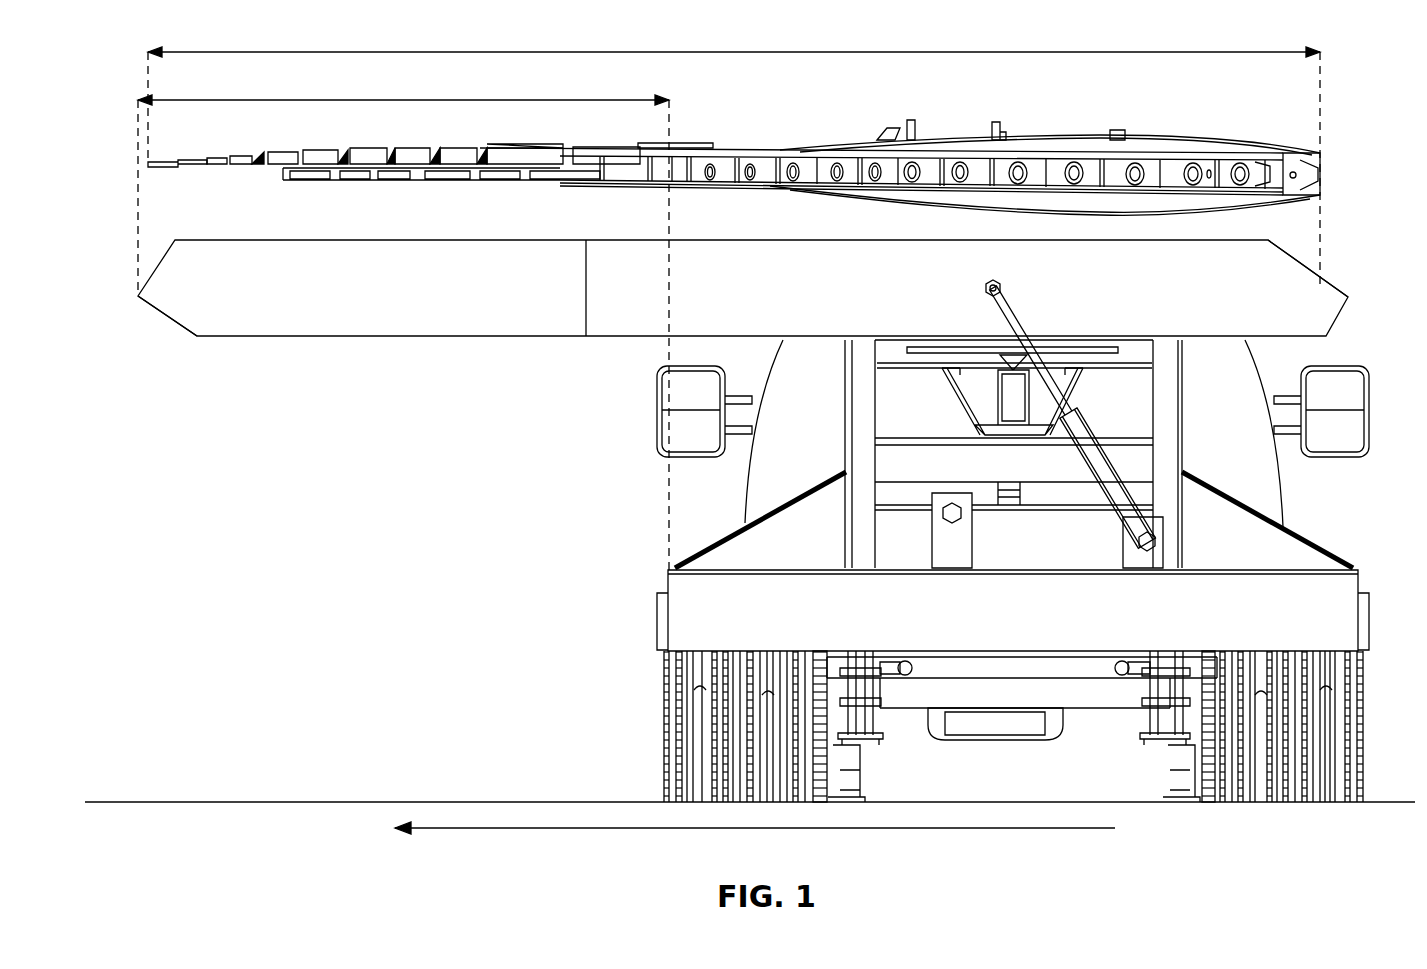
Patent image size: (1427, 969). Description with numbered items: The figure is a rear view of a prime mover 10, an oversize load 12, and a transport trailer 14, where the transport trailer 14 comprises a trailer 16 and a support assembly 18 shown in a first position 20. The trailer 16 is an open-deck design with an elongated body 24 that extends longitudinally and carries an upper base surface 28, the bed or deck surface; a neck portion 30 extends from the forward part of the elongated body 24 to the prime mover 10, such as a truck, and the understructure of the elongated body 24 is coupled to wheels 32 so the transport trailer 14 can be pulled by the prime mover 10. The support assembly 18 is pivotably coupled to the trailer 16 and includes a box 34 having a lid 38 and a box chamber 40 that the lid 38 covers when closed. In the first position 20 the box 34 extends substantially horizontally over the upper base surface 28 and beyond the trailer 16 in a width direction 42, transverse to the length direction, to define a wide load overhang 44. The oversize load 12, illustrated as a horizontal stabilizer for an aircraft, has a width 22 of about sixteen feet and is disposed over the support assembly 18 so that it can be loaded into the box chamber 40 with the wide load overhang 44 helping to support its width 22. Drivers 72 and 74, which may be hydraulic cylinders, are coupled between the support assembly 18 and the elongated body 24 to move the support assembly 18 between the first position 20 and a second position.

The prime mover 10 is at (1285, 502).
The oversize load 12 is at (587, 148).
The transport trailer 14 is at (365, 323).
The trailer 16 is at (1337, 630).
The support assembly 18 is at (1285, 261).
The first position 20 is at (149, 247).
The width 22 is at (692, 52).
The elongated body 24 is at (1303, 550).
The upper base surface 28 is at (714, 567).
The neck portion 30 is at (1067, 402).
The wheels 32 is at (698, 748).
The box 34 is at (193, 313).
The lid 38 is at (390, 240).
The box chamber 40 is at (255, 310).
The width direction 42 is at (697, 830).
The wide load overhang 44 is at (425, 100).
The driver 72 is at (1093, 458).
The driver 74 is at (1073, 424).